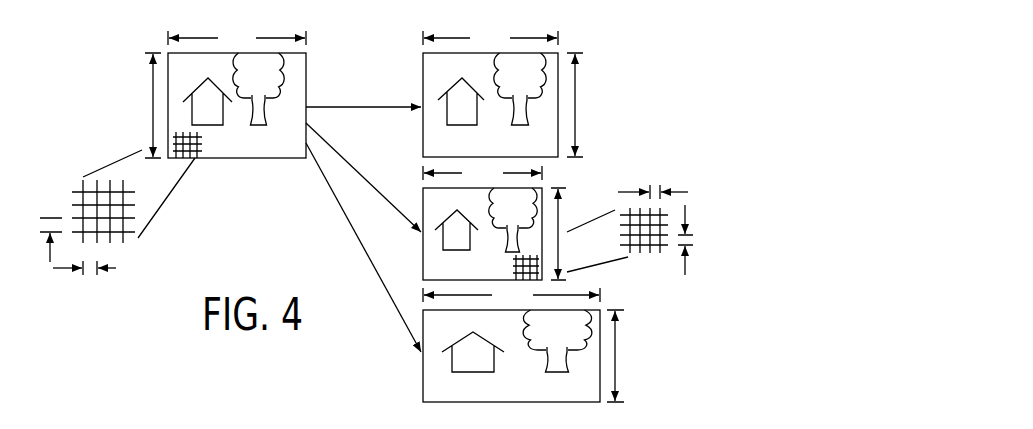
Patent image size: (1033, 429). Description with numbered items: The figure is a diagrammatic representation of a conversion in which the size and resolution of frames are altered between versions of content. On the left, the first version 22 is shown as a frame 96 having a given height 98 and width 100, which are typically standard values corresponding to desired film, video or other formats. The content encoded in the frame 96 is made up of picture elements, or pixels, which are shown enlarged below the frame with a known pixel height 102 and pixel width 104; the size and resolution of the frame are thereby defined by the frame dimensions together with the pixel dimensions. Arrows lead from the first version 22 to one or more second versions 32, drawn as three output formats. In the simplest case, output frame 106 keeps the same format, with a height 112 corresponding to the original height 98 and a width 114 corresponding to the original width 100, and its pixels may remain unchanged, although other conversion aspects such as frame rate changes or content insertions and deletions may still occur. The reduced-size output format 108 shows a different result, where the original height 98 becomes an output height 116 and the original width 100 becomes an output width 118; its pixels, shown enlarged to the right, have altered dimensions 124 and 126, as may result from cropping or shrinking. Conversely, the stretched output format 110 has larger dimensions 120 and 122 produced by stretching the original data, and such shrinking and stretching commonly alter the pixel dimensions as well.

The first version 22 is at (189, 107).
The second versions 32 is at (524, 211).
The frame 96 is at (238, 159).
The height 98 is at (152, 102).
The width 100 is at (237, 39).
The pixel height 102 is at (50, 217).
The pixel width 104 is at (116, 267).
The output frame 106 is at (422, 77).
The reduced size output format 108 is at (422, 211).
The stretched output format 110 is at (422, 377).
The output height 112 is at (577, 104).
The output width 114 is at (490, 39).
The output height 116 is at (560, 233).
The output width 118 is at (482, 174).
The output height dimension 120 is at (617, 355).
The output width dimension 122 is at (511, 296).
The output pixel height 124 is at (686, 262).
The output pixel width 126 is at (688, 192).